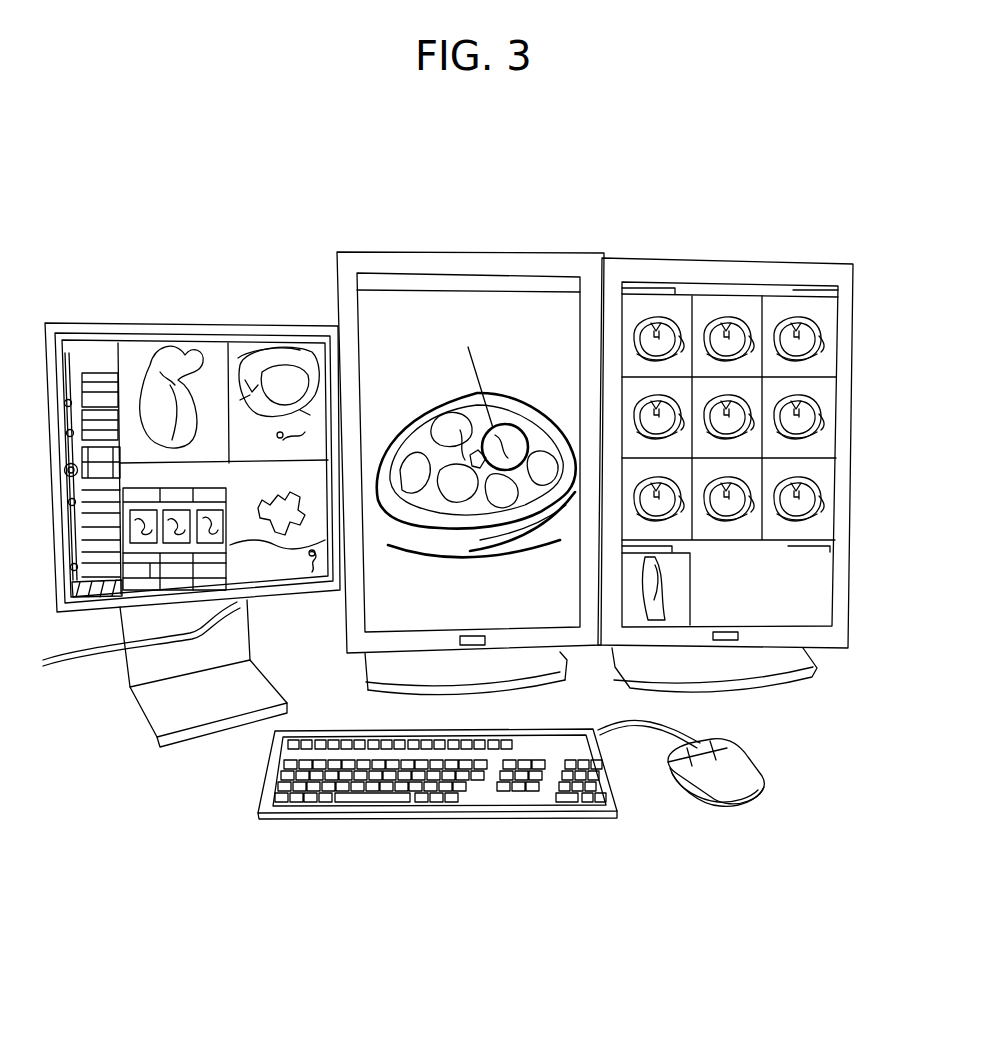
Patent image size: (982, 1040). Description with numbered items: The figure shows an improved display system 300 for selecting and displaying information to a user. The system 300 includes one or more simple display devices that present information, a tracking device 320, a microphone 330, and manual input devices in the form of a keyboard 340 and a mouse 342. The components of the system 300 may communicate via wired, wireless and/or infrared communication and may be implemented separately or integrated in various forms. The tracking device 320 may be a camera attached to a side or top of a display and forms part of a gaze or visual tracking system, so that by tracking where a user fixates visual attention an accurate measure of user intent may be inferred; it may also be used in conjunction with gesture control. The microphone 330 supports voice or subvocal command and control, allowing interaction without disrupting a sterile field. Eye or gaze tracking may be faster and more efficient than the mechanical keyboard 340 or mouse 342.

The display system 300 is at (189, 236).
The tracking device 320 is at (328, 277).
The microphone 330 is at (386, 665).
The keyboard 340 is at (445, 820).
The mouse 342 is at (733, 767).